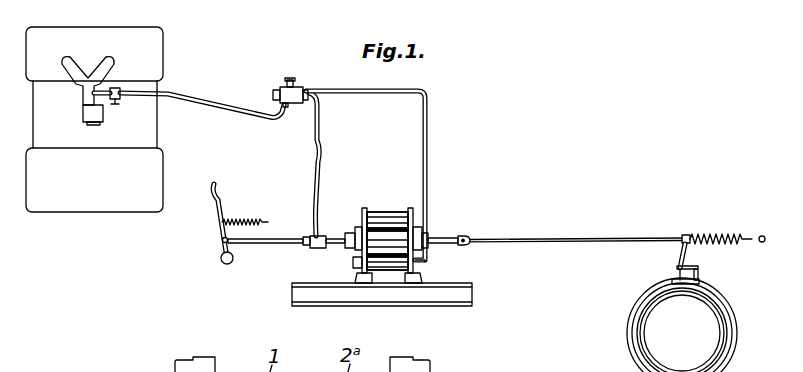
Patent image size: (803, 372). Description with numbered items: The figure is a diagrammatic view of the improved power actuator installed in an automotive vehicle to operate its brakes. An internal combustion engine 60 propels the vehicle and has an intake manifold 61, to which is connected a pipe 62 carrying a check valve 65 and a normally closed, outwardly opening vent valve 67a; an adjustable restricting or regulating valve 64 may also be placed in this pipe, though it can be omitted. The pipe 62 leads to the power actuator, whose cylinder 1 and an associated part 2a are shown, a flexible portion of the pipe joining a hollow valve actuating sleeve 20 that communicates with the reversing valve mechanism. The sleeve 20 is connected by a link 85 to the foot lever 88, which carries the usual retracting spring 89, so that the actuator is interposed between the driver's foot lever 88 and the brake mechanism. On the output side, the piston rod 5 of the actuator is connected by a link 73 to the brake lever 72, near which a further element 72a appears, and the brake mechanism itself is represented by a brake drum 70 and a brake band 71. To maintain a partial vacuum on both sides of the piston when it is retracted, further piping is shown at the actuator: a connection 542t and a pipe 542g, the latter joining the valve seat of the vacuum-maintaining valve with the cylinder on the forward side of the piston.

The cylinder 1 is at (396, 206).
The motor winding casing 2a is at (372, 207).
The piston rod 5 is at (445, 237).
The hollow valve actuating sleeve 20 is at (332, 237).
The internal combustion engine 60 is at (157, 66).
The intake manifold 61 is at (80, 88).
The pipe 62 is at (235, 108).
The adjustable restricting valve 64 is at (120, 99).
The check valve 65 is at (287, 90).
The vent valve 67a is at (302, 81).
The brake drum 70 is at (643, 342).
The brake band 71 is at (742, 338).
The brake lever 72 is at (690, 258).
The return spring 72a is at (717, 233).
The link 73 is at (557, 239).
The link 85 is at (282, 245).
The foot lever 88 is at (210, 223).
The retracting spring 89 is at (240, 221).
The upper air pipe 542t is at (428, 135).
The pipe 542g is at (428, 261).